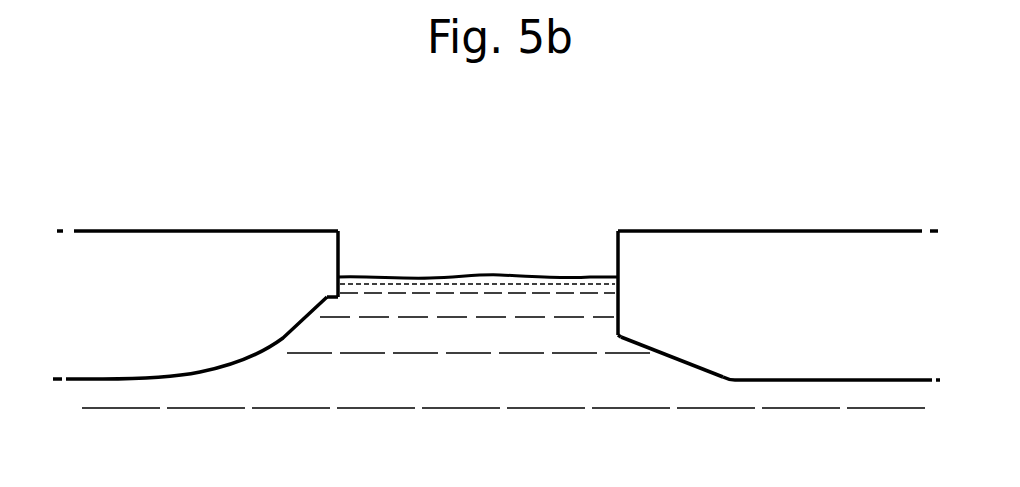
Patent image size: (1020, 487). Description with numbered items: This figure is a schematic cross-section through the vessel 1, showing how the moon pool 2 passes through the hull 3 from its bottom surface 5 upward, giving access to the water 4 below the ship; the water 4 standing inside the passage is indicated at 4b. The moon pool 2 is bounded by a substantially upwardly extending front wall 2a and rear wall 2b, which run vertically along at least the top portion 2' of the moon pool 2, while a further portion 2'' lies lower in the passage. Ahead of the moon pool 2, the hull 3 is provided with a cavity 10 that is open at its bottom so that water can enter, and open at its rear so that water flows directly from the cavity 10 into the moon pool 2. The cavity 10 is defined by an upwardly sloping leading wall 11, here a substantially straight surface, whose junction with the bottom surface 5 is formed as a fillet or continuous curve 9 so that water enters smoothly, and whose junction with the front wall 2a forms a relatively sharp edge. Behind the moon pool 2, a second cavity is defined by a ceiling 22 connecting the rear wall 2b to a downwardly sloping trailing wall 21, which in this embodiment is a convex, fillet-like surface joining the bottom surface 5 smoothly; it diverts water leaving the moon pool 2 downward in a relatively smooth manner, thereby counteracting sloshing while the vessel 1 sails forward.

The vessel 1 is at (228, 197).
The moon pool 2 is at (477, 203).
The front wall 2a is at (618, 247).
The rear wall 2b is at (340, 252).
The top portion of the moon pool 2' is at (467, 240).
The lower part of recess 2'' is at (470, 407).
The hull 3 is at (822, 262).
The water 4 is at (352, 452).
The filling surface 4b is at (525, 277).
The bottom surface 5 is at (105, 379).
The continuous curve 9 is at (722, 378).
The cavity 10 is at (652, 362).
The upwardly sloping leading wall 11 is at (652, 347).
The downwardly sloping trailing wall 21 is at (290, 337).
The ceiling 22 is at (334, 297).